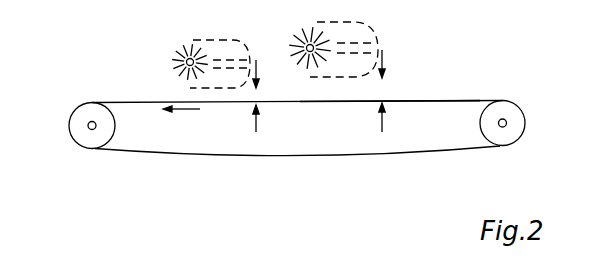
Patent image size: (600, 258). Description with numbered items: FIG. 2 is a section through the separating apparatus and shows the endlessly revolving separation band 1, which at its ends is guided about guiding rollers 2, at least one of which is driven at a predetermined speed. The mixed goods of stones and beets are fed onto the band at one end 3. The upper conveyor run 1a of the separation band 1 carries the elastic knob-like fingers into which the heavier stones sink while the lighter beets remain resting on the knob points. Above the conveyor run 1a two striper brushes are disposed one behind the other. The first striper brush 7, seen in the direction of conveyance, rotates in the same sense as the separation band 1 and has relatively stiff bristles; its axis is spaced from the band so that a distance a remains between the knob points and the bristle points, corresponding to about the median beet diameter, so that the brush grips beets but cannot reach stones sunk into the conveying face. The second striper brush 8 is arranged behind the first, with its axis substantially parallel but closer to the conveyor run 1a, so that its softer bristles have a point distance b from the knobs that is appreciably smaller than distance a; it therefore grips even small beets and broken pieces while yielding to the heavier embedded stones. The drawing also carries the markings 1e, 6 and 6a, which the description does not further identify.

The separation band 1 is at (457, 166).
The conveyor run 1a is at (413, 102).
The belt travel direction 1e is at (189, 112).
The guiding rollers 2 is at (92, 130).
The end 3 is at (507, 90).
The drive drum 6 is at (67, 100).
The guide casing 6a is at (167, 36).
The first striper brush 7 is at (337, 43).
The second striper brush 8 is at (178, 62).
The distance a is at (385, 89).
The point distance b is at (255, 97).